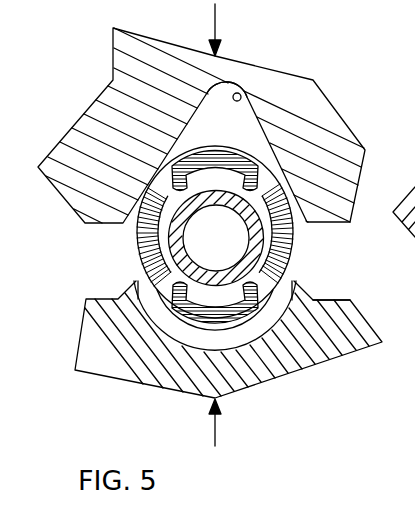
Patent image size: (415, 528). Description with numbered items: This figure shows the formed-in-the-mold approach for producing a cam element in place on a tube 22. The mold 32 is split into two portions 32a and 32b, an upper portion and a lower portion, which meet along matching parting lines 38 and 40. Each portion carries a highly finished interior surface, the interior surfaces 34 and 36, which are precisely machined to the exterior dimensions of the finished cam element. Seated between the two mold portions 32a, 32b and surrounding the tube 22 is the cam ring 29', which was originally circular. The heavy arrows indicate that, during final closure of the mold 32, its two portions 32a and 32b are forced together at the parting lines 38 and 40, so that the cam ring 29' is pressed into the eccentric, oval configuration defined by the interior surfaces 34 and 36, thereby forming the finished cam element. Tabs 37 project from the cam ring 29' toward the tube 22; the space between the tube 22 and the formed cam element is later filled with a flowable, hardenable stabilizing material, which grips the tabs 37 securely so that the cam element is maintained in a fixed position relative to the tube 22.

The tube 22 is at (229, 193).
The cam ring 29' is at (249, 232).
The mold 32 is at (202, 231).
The mold portion 32a is at (312, 118).
The mold portion 32b is at (107, 332).
The interior surface 34 is at (242, 93).
The interior surface 36 is at (244, 346).
The tabs 37 is at (201, 160).
The parting line 38 is at (330, 223).
The parting line 40 is at (342, 300).